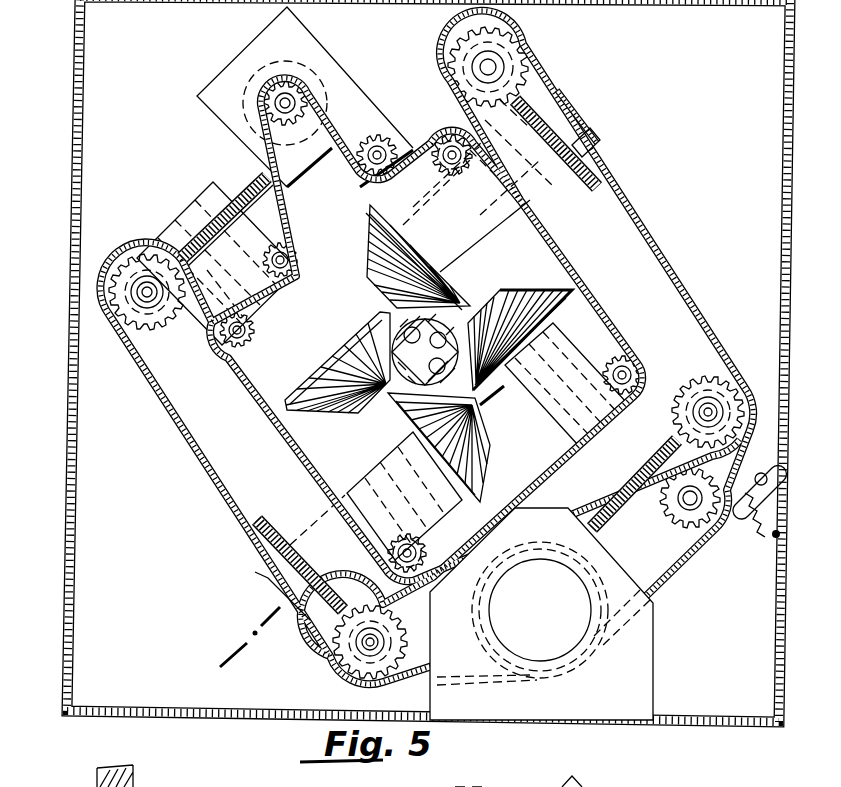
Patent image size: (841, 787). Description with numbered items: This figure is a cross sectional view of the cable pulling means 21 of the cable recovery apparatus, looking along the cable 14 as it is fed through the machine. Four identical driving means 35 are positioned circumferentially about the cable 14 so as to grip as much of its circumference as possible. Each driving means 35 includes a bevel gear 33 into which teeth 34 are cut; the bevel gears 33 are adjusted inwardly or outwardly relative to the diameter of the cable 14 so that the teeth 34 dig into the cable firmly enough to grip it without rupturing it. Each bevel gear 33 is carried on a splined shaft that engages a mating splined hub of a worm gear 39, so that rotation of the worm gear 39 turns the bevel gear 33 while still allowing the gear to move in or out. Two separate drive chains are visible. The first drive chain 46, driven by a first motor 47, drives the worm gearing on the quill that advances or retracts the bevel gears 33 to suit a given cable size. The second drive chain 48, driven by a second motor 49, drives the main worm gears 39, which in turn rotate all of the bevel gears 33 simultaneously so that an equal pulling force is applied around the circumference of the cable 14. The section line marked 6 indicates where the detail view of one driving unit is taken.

The cable pulling means 21 is at (72, 133).
The cable 14 is at (473, 310).
The bevel gear 33 is at (375, 255).
The teeth 34 is at (570, 290).
The driving means 35 is at (193, 217).
The worm gear 39 is at (255, 178).
The first drive chain 46 is at (332, 148).
The first motor 47 is at (328, 45).
The second drive chain 48 is at (703, 303).
The second motor 49 is at (490, 217).
The section line 6- 6 is at (503, 410).